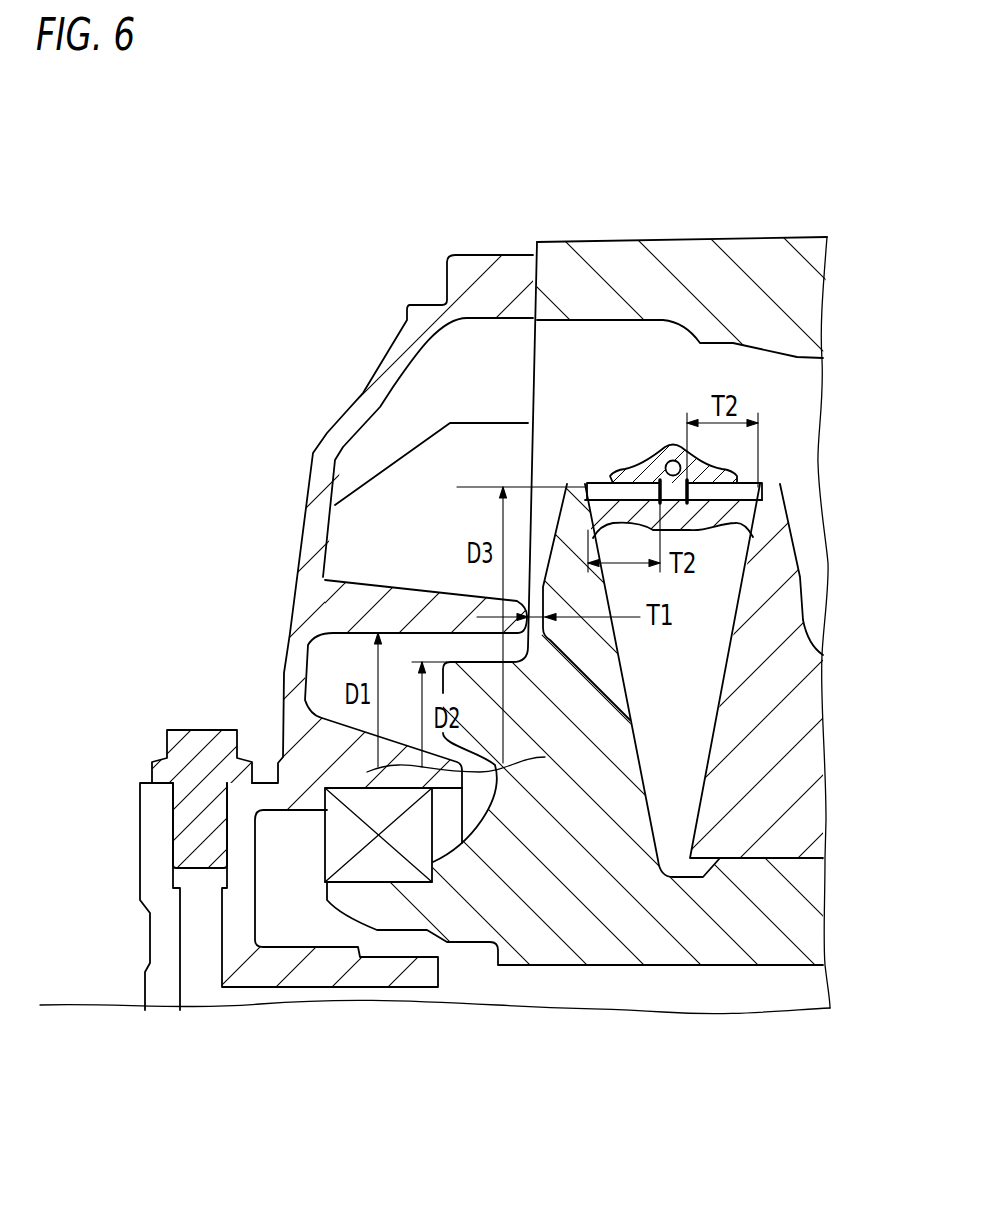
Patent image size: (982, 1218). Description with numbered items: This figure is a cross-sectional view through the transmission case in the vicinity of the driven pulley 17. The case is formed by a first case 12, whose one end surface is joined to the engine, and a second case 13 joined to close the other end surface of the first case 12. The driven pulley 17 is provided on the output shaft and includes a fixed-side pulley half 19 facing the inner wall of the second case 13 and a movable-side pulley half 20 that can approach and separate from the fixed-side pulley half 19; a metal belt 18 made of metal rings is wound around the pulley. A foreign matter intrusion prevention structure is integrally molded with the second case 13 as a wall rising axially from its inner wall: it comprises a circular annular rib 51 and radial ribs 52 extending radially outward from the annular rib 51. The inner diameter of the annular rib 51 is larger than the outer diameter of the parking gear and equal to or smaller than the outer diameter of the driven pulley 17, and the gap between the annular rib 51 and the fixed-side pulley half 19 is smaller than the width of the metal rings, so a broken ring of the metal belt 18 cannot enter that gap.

The first case 12 is at (697, 253).
The second case 13 is at (377, 365).
The driven pulley 17 is at (603, 134).
The metal belt 18 is at (648, 444).
The fixed-side pulley half 19 is at (576, 505).
The movable-side pulley half 20 is at (773, 510).
The annular rib 51 is at (417, 600).
The radial rib 52 is at (490, 360).